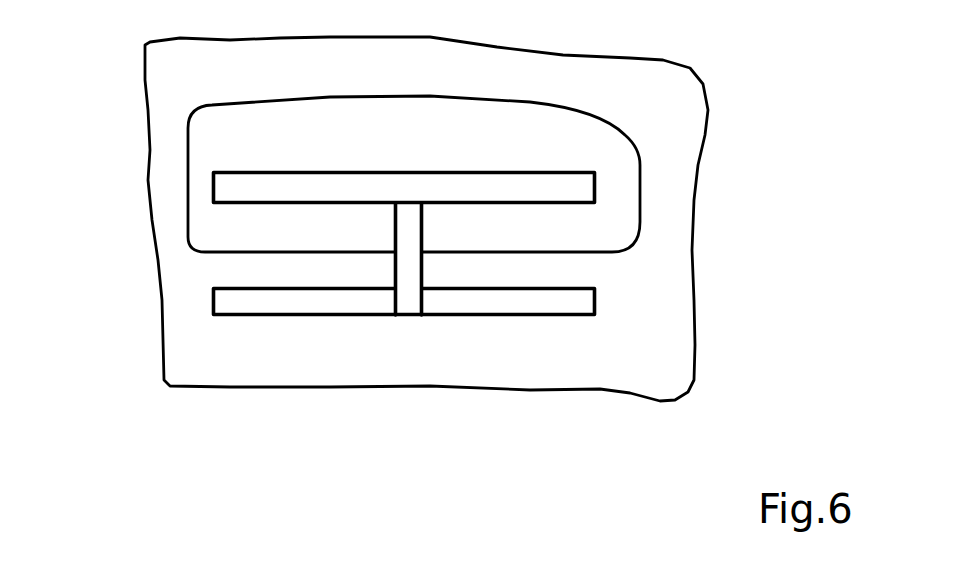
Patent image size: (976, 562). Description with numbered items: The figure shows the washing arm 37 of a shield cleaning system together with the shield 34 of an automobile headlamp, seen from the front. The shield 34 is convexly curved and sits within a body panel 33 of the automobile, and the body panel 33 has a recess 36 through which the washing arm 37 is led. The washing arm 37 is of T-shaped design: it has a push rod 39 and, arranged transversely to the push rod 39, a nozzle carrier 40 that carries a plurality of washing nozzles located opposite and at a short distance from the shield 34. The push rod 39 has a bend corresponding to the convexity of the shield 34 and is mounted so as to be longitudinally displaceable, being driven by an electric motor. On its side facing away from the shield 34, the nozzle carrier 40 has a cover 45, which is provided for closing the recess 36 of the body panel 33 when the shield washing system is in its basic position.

The body panel 33 is at (673, 380).
The shield 34 is at (563, 127).
The recess 36 is at (618, 309).
The washing arm 37 is at (204, 226).
The push rod 39 is at (410, 267).
The nozzle carrier 40 is at (614, 194).
The cover 45 is at (248, 186).